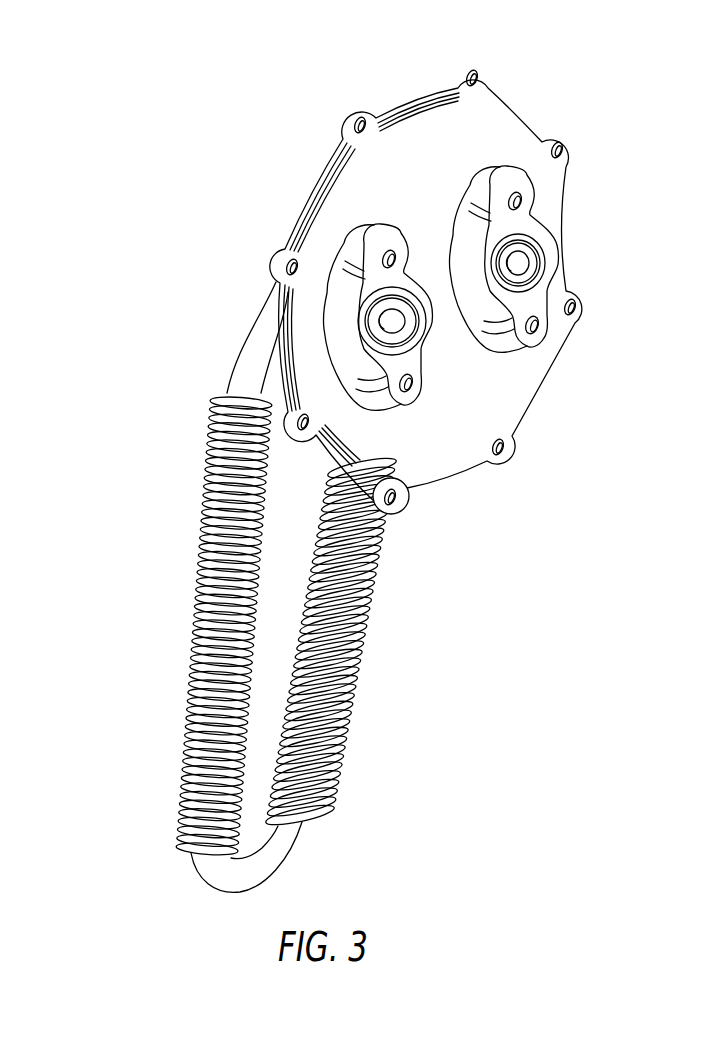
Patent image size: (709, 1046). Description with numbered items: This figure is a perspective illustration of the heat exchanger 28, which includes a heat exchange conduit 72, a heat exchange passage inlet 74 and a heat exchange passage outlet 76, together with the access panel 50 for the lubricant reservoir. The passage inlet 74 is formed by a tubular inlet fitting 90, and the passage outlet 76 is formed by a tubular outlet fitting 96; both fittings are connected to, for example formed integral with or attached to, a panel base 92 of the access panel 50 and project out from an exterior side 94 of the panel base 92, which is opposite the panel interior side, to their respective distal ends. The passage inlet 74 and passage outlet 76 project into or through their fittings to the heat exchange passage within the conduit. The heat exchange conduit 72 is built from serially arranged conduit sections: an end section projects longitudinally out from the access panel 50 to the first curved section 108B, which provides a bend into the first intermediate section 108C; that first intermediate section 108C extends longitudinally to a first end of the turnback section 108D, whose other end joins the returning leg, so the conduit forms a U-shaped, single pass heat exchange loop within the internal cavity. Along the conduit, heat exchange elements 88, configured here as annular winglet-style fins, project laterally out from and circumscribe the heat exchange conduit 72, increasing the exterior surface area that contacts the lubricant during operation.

The access panel 50 is at (441, 283).
The panel base 92 is at (441, 291).
The exterior side 94 is at (517, 377).
The heat exchange passage inlet 74 is at (310, 317).
The tubular inlet fitting 90 is at (370, 304).
The heat exchange passage outlet 76 is at (573, 259).
The tubular outlet fitting 96 is at (550, 243).
The heat exchanger 28 is at (263, 623).
The heat exchange elements 88 is at (194, 693).
The heat exchange conduit 72 is at (286, 585).
The first curved section 108B is at (249, 341).
The first intermediate section 108C is at (218, 390).
The turnback section 108D is at (294, 849).